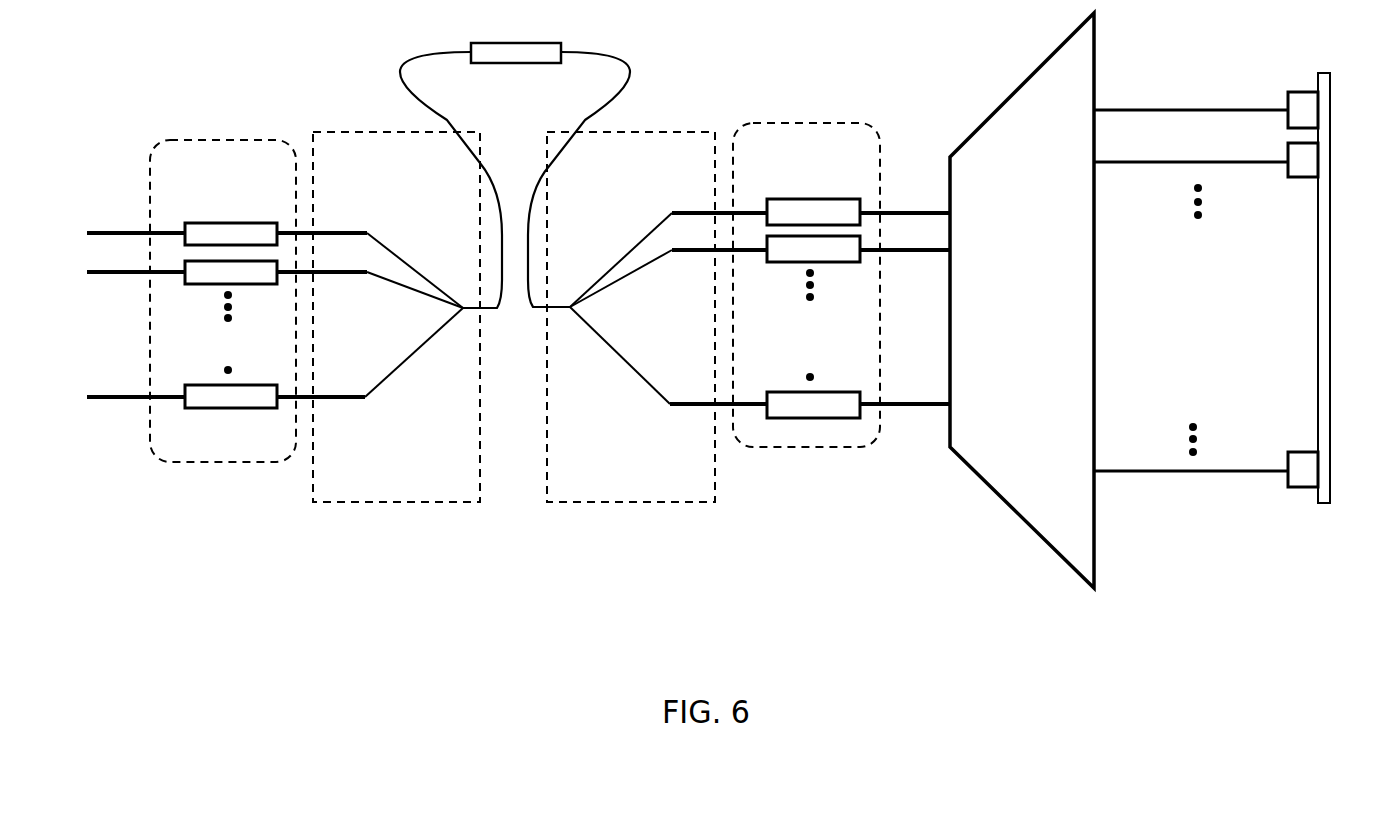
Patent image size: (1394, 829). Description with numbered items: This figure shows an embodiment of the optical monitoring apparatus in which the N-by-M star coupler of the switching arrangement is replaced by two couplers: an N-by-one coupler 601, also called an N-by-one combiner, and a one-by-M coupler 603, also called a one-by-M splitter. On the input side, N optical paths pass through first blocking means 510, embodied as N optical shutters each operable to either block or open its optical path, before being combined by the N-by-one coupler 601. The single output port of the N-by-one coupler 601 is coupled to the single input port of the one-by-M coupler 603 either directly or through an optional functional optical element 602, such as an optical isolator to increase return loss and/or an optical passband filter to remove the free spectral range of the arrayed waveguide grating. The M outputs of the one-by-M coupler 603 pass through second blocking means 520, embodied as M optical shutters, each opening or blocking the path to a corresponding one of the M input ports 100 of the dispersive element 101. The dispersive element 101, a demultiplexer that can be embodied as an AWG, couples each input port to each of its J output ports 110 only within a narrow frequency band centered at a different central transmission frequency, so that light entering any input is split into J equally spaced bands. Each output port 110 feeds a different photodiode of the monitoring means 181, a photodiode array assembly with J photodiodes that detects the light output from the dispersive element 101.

The first blocking means 510 is at (205, 140).
The second blocking means 520 is at (798, 123).
The N×1 coupler 601 is at (418, 212).
The optional functional optical element 602 is at (540, 43).
The 1×M coupler 603 is at (602, 213).
The input ports of the dispersive element 100 is at (913, 463).
The dispersive element 101 is at (1025, 82).
The output ports of the dispersive element 110 is at (1117, 108).
The monitoring means 181 is at (1337, 47).